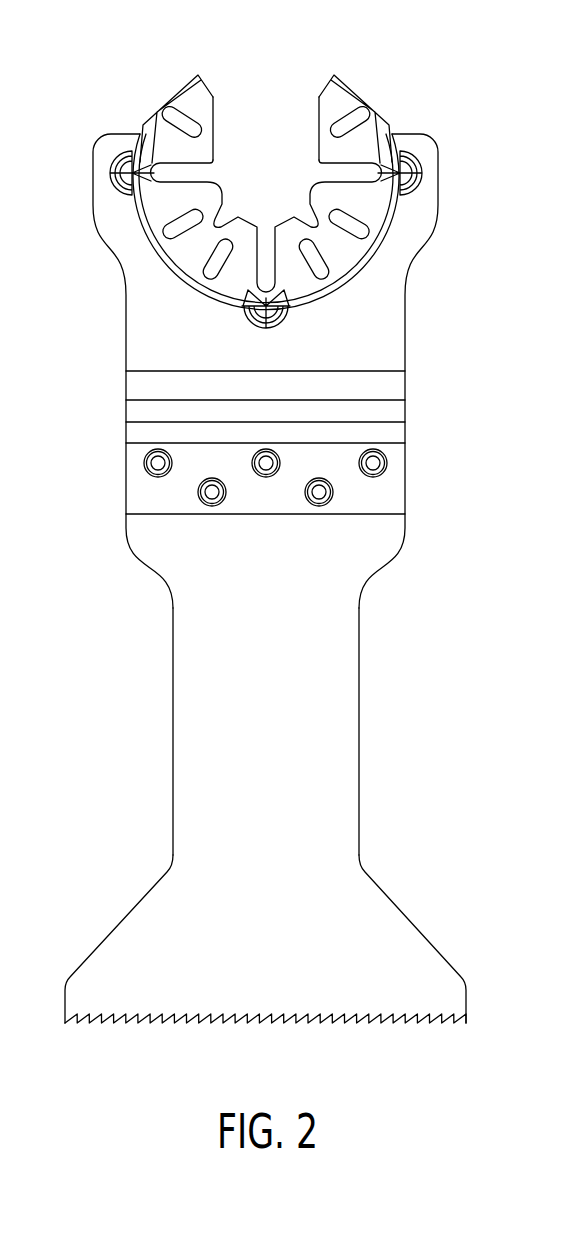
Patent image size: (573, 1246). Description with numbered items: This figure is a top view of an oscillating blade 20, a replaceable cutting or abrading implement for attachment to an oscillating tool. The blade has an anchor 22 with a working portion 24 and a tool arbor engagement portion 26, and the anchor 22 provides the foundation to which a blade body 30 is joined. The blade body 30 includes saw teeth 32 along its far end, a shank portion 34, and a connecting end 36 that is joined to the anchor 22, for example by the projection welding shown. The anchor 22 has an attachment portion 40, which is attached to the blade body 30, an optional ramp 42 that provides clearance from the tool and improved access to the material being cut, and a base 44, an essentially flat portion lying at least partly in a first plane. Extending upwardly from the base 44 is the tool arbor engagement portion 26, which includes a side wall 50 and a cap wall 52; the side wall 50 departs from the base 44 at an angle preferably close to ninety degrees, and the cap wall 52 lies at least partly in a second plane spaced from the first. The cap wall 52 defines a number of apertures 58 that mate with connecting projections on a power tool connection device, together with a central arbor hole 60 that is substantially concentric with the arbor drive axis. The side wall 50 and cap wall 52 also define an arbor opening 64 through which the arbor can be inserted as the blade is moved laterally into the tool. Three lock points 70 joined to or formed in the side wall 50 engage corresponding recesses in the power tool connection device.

The oscillating blade 20 is at (443, 39).
The anchor 22 is at (103, 321).
The working portion 24 is at (436, 430).
The tool arbor engagement portion 26 is at (368, 85).
The blade body 30 is at (384, 719).
The saw teeth 32 is at (402, 1017).
The shank portion 34 is at (346, 783).
The connecting end 36 is at (378, 545).
The attachment portion 40 is at (137, 497).
The ramp 42 is at (387, 397).
The base 44 is at (392, 277).
The side wall 50 is at (386, 235).
The cap wall 52 is at (200, 100).
The apertures 58 is at (208, 268).
The central arbor hole 60 is at (282, 192).
The arbor opening 64 is at (266, 108).
The lock point 70 is at (117, 183).